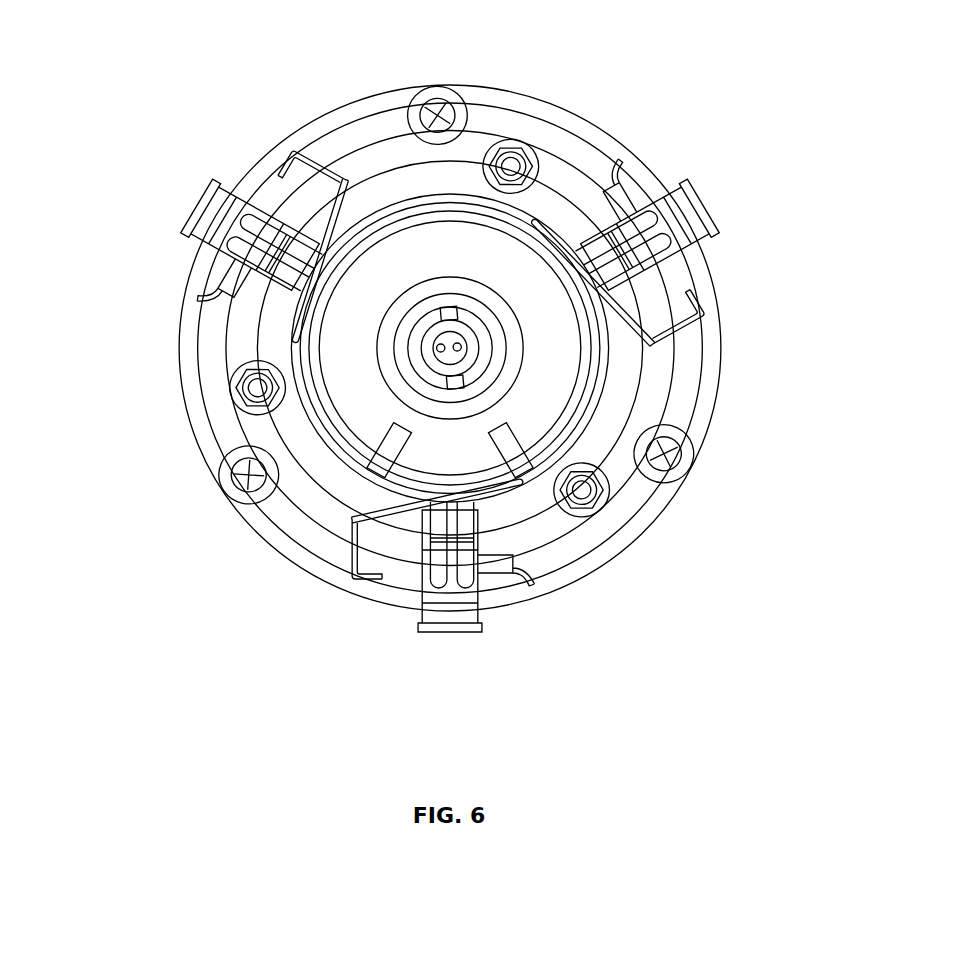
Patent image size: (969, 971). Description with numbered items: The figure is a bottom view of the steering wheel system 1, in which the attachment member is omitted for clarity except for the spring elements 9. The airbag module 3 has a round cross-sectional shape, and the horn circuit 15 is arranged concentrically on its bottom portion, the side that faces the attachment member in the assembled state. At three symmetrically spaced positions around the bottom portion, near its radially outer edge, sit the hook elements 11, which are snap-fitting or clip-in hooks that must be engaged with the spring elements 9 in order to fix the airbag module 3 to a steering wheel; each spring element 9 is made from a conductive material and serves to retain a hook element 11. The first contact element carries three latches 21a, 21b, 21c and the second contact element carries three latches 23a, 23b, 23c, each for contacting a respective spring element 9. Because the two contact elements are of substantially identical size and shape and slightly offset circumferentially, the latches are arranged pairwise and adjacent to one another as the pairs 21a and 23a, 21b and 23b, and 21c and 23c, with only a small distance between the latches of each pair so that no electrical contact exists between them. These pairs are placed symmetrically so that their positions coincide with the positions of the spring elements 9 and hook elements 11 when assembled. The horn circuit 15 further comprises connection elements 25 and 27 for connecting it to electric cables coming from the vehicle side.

The steering wheel system 1 is at (784, 137).
The airbag module 3 is at (338, 137).
The spring element 9 is at (502, 572).
The hook element 11 is at (437, 614).
The horn circuit 15 is at (448, 197).
The latch 21a is at (608, 270).
The latch 21b is at (437, 527).
The latch 21c is at (300, 253).
The latch 23a is at (592, 198).
The latch 23b is at (463, 514).
The latch 23c is at (283, 273).
The connection element 25 is at (372, 458).
The connection element 27 is at (506, 430).